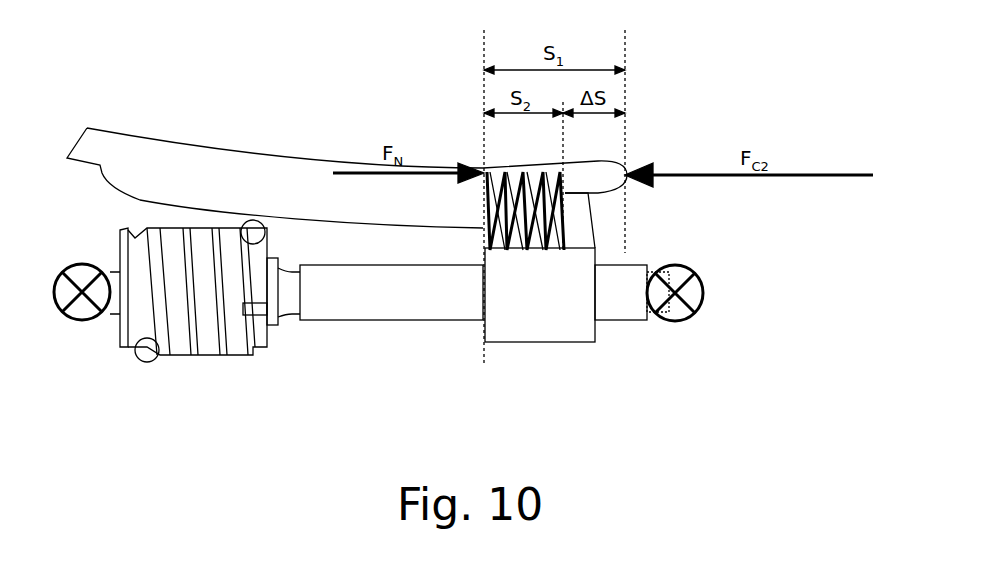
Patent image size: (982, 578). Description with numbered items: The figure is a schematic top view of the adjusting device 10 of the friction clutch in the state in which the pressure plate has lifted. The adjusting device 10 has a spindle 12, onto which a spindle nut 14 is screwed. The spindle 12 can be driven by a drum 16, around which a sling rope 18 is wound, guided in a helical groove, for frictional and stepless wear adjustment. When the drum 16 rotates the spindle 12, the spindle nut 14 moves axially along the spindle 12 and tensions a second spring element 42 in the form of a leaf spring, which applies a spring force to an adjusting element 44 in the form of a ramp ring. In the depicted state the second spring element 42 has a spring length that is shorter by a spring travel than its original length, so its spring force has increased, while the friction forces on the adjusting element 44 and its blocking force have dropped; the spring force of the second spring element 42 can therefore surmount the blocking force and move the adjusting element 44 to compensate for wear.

The adjusting device 10 is at (678, 346).
The spindle 12 is at (327, 297).
The spindle nut 14 is at (546, 318).
The drum 16 is at (118, 335).
The sling rope 18 is at (207, 355).
The second spring element 42 is at (484, 230).
The adjusting element 44 is at (182, 172).